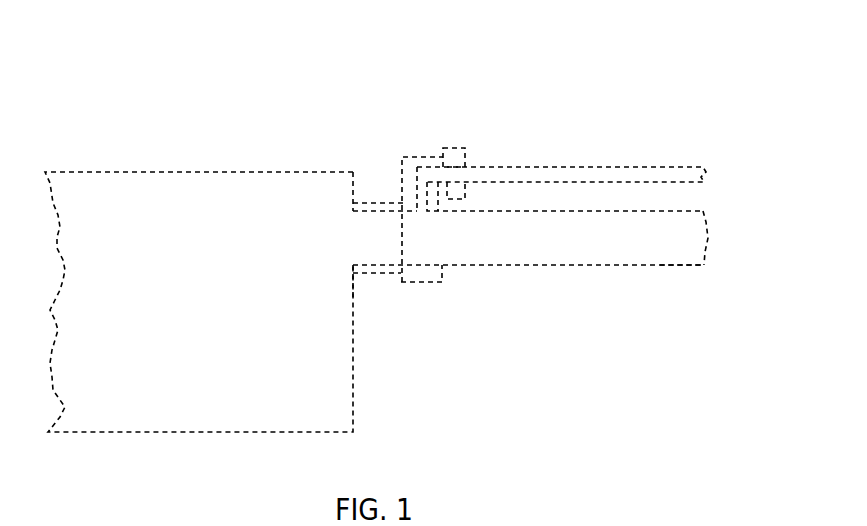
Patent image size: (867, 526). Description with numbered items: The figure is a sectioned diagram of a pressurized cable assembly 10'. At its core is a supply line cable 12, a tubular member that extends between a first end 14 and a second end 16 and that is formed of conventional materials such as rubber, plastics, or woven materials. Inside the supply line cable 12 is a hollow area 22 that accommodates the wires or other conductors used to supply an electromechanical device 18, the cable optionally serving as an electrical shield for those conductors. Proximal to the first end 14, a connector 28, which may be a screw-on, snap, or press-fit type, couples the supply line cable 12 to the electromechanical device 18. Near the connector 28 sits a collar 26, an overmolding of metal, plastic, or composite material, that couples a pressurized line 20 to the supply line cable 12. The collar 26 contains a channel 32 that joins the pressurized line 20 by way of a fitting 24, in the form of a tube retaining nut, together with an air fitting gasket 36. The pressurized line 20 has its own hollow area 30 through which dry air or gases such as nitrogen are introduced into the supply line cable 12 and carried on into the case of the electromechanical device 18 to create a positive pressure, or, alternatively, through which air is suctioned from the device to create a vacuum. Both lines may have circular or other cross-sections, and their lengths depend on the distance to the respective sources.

The pressurized cable assembly 10' is at (595, 48).
The supply line cable 12 is at (510, 266).
The first end 14 is at (355, 268).
The second end 16 is at (707, 222).
The electromechanical device 18 is at (157, 172).
The pressurized line 20 is at (672, 166).
The hollow area 22 is at (687, 243).
The fitting 24 is at (464, 155).
The collar 26 is at (410, 156).
The connector 28 is at (373, 273).
The hollow area 30 is at (562, 166).
The channel 32 is at (415, 192).
The air fitting gasket 36 is at (442, 157).